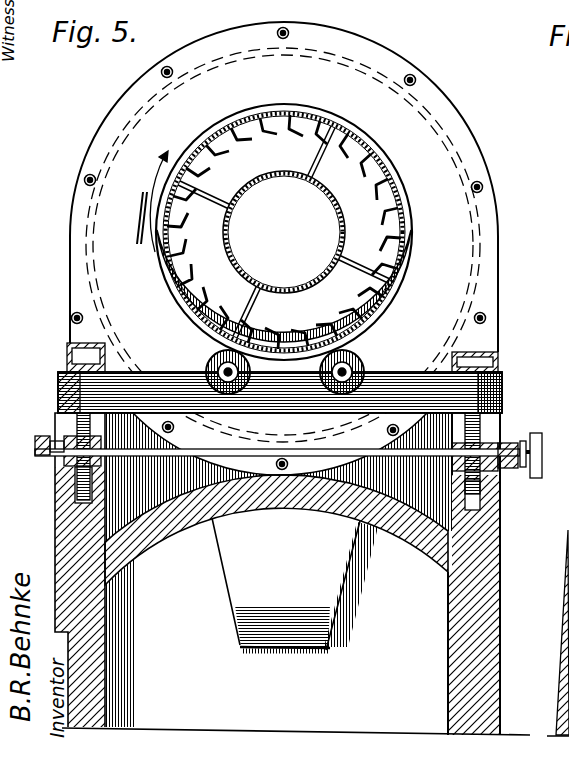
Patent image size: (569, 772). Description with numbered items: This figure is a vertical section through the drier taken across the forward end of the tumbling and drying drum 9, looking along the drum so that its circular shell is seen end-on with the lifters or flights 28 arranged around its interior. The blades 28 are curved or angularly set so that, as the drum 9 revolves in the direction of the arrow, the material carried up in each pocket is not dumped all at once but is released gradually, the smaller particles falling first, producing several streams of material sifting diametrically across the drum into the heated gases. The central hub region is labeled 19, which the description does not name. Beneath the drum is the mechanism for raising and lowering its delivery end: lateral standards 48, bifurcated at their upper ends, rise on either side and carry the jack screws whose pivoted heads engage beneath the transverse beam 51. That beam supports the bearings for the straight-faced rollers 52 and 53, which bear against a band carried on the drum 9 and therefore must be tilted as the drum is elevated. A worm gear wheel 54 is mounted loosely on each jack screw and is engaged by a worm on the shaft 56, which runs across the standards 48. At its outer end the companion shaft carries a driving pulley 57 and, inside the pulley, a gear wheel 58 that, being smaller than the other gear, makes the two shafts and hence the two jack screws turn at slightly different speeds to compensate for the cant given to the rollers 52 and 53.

The lifters or flights 28 is at (268, 116).
The tumbling and drying drum 9 is at (383, 173).
The hub shaft 19 is at (339, 216).
The worm gear wheel 54 is at (383, 316).
The roller 52 is at (246, 382).
The roller 53 is at (358, 384).
The transverse beams 51 is at (490, 398).
The shaft 56 is at (512, 449).
The driving pulley 57 is at (541, 455).
The gear wheel 58 is at (521, 470).
The lateral standards 48 is at (56, 503).